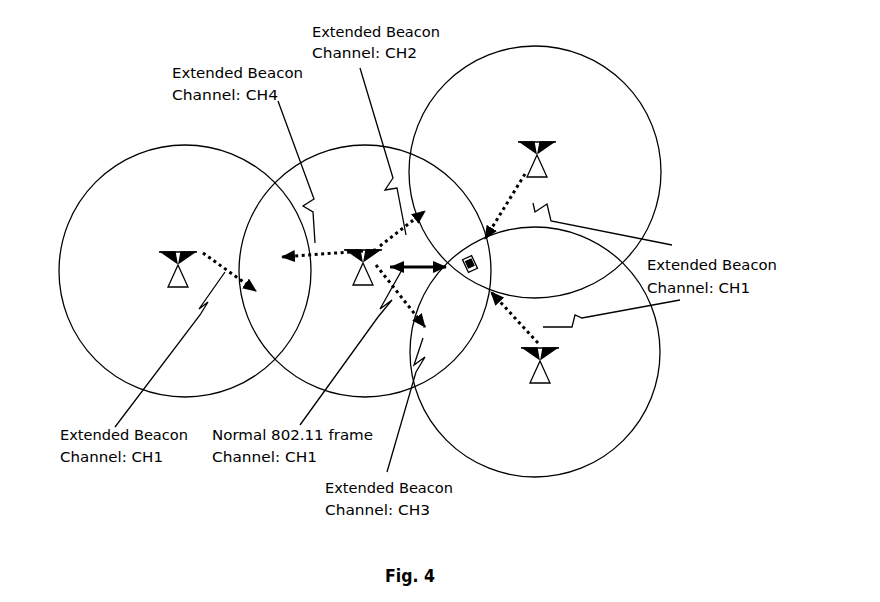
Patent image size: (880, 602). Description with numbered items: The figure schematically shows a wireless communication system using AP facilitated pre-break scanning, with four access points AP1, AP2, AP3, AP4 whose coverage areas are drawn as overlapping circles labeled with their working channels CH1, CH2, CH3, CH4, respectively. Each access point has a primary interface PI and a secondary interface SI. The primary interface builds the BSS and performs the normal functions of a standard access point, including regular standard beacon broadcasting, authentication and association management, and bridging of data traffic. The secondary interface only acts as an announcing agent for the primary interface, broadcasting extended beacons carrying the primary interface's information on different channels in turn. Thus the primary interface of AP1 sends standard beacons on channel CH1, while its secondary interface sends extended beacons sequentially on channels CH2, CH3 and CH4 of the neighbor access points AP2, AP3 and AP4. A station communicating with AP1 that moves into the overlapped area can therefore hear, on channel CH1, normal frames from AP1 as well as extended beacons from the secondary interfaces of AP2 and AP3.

The access point AP1 is at (357, 271).
The neighbor access point AP2 is at (535, 163).
The neighbor access point AP3 is at (541, 372).
The neighbor access point AP4 is at (177, 273).
The working channel CH1 is at (365, 271).
The working channel CH2 is at (535, 172).
The working channel CH3 is at (535, 352).
The working channel CH4 is at (185, 271).